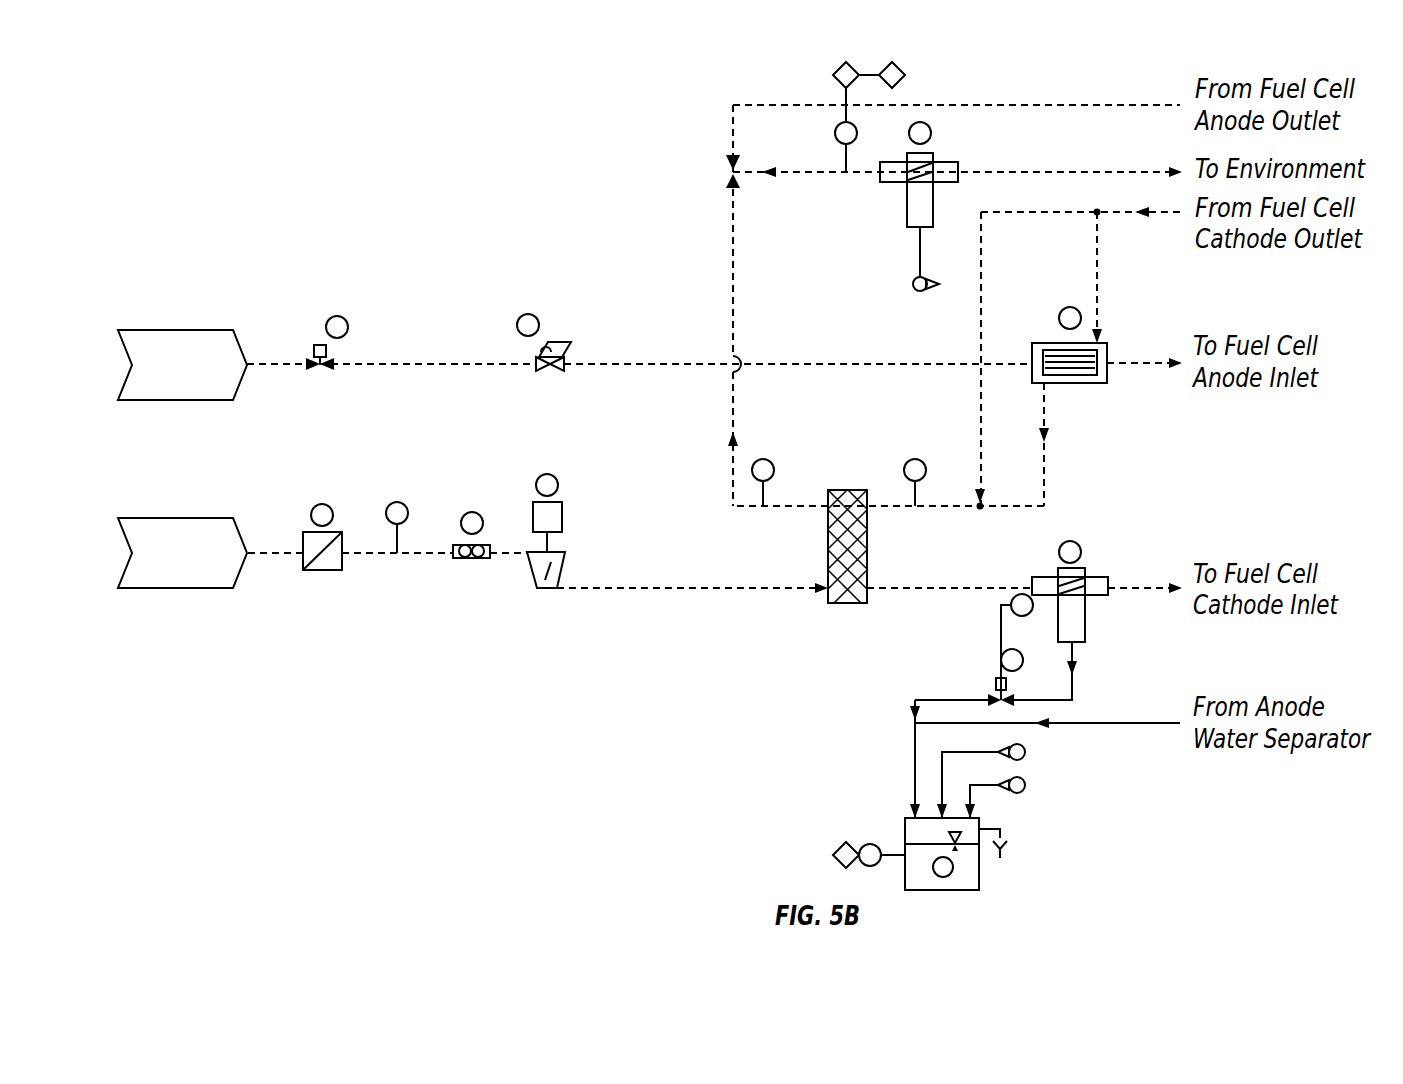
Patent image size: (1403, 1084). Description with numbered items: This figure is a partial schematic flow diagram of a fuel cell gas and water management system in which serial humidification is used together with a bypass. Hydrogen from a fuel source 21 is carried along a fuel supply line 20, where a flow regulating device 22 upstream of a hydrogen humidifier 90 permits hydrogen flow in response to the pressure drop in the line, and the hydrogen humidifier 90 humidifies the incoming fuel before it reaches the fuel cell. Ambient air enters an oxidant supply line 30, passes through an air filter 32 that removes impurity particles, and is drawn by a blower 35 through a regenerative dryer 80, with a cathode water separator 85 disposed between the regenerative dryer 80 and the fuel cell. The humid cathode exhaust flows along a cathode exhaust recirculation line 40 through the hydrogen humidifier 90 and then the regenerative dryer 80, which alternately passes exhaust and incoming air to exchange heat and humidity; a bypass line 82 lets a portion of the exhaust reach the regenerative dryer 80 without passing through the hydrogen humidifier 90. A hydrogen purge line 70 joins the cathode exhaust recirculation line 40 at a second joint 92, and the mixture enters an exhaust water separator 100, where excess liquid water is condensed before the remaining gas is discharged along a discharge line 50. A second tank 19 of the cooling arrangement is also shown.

The second tank 19 is at (980, 876).
The fuel supply line 20 is at (478, 362).
The fuel source 21 is at (183, 330).
The flow regulating device 22 is at (566, 345).
The oxidant supply line 30 is at (253, 553).
The air filter 32 is at (323, 572).
The blower 35 is at (545, 590).
The cathode exhaust recirculation line 40 is at (1105, 212).
The discharge line 50 is at (1090, 172).
The hydrogen purge line 70 is at (1108, 103).
The regenerative dryer 80 is at (848, 490).
The bypass line 82 is at (976, 425).
The cathode water separator 85 is at (1070, 592).
The hydrogen humidifier 90 is at (1060, 350).
The second joint 92 is at (730, 172).
The exhaust water separator 100 is at (925, 178).